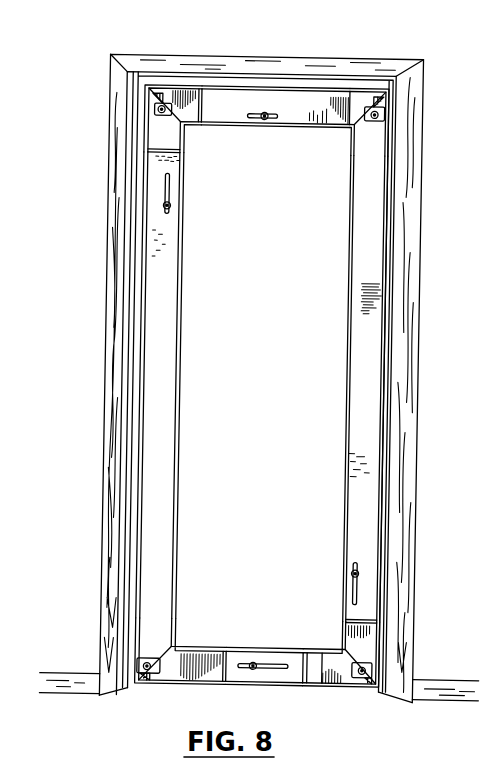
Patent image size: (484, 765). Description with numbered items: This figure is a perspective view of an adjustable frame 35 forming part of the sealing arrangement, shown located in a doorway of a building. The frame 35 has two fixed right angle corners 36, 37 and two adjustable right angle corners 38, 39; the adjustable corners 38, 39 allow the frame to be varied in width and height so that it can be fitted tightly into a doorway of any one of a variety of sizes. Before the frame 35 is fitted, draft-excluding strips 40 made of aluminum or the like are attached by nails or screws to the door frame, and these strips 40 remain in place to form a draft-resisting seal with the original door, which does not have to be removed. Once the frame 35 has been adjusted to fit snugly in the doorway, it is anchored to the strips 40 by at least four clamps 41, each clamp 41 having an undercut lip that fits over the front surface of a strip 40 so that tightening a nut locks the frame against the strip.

The adjustable frame 35 is at (290, 101).
The fixed right angle corner 36 is at (356, 106).
The fixed right angle corner 37 is at (148, 650).
The adjustable right angle corner 38 is at (173, 101).
The adjustable right angle corner 39 is at (363, 654).
The draft-excluding strip 40 is at (150, 258).
The clamp 41 is at (153, 109).